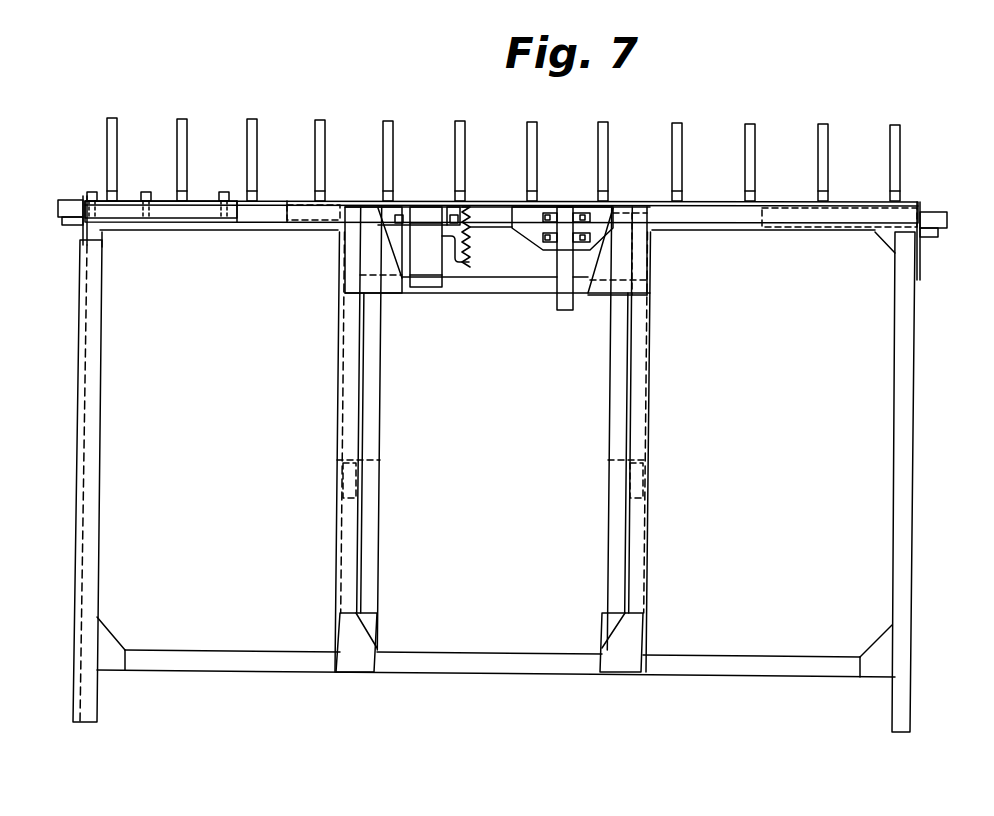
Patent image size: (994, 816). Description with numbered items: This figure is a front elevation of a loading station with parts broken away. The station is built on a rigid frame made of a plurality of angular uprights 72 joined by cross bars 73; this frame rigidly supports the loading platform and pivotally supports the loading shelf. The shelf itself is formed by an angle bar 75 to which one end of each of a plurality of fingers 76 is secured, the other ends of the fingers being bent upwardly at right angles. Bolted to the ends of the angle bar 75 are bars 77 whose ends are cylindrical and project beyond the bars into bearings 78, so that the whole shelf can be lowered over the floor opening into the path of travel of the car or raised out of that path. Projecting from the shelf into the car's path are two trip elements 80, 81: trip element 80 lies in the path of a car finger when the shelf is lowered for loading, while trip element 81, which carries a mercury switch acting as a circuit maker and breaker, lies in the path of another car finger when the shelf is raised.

The angular uprights 72 is at (98, 397).
The cross bars 73 is at (515, 293).
The angle bar 75 is at (271, 199).
The fingers 76 is at (253, 142).
The bars 77 is at (200, 215).
The bearings 78 is at (68, 222).
The trip element 80 is at (440, 247).
The trip element 81 is at (560, 262).